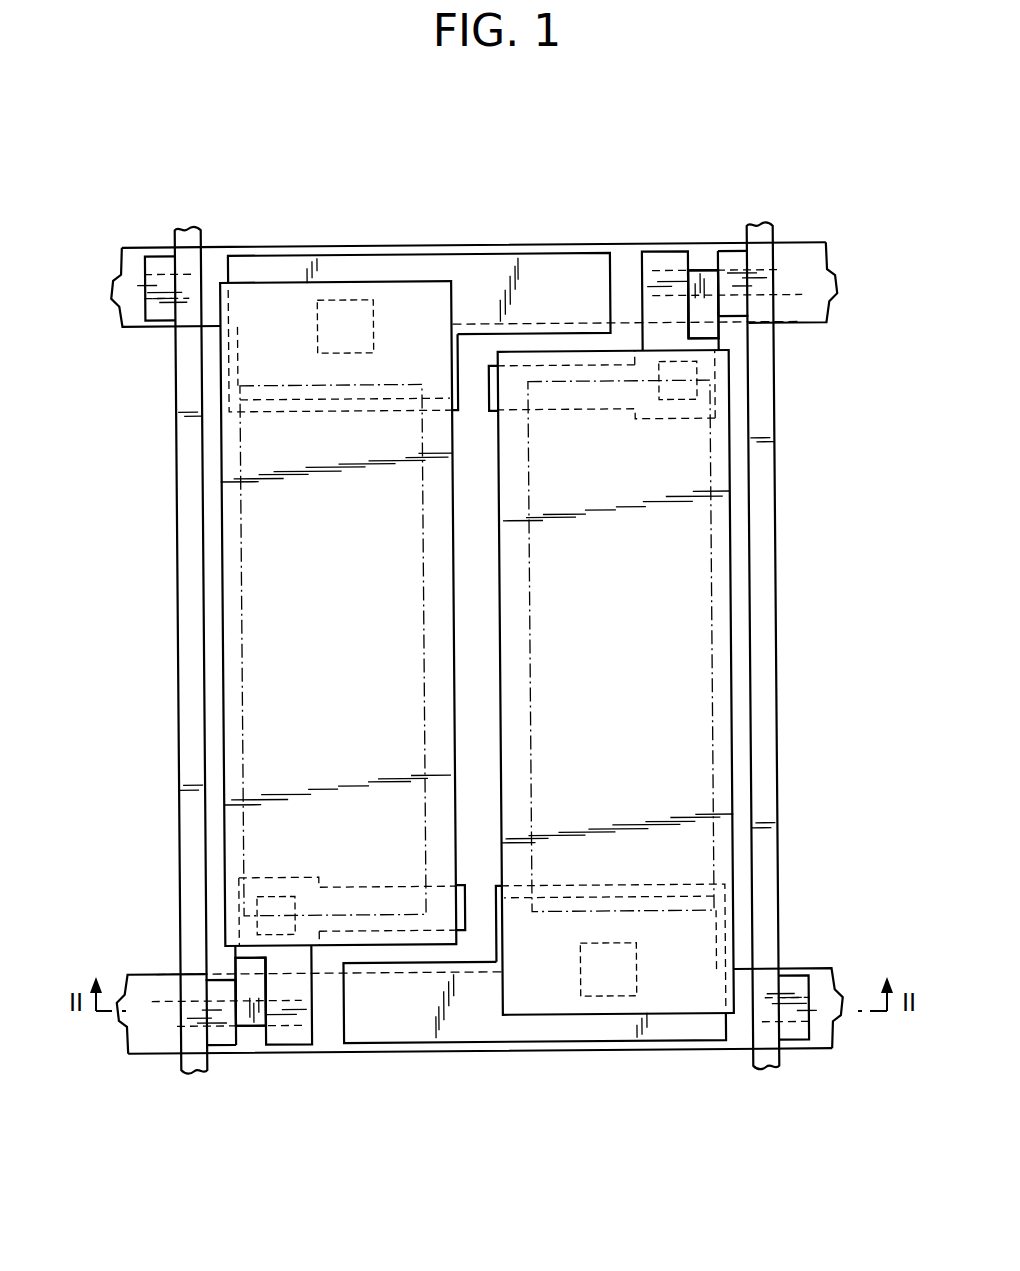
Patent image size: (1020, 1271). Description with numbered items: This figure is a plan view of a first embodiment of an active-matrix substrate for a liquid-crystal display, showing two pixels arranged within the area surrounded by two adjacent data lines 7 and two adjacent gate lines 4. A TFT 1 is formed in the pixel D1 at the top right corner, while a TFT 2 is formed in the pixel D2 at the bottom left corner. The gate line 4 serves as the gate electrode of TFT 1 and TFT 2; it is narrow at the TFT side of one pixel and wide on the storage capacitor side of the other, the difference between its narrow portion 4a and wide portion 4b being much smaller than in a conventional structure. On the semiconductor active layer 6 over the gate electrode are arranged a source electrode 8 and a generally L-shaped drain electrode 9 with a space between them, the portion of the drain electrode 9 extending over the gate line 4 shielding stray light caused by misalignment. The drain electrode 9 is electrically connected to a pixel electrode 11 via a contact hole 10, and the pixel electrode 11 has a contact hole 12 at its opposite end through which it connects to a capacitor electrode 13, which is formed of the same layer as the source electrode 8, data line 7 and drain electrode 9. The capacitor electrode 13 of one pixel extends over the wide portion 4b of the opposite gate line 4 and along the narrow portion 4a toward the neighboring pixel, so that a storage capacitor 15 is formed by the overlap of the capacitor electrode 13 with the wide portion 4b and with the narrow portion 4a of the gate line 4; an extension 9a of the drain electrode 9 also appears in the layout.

The TFT 1 is at (705, 252).
The TFT 2 is at (247, 1042).
The gate line 4 is at (487, 1054).
The narrow portion 4a is at (331, 1040).
The wide portion 4b is at (688, 950).
The semiconductor active layer 6 is at (246, 1010).
The data line 7 is at (762, 582).
The source electrode 8 is at (224, 1035).
The drain electrode 9 is at (295, 1040).
The source electrode extension 9a is at (350, 897).
The contact hole 10 is at (260, 920).
The pixel electrode 11 is at (267, 532).
The contact hole 12 is at (600, 962).
The capacitor electrode 13 is at (425, 1040).
The storage capacitor 15 is at (536, 1064).
The pixel D1 is at (750, 703).
The pixel D2 is at (208, 706).